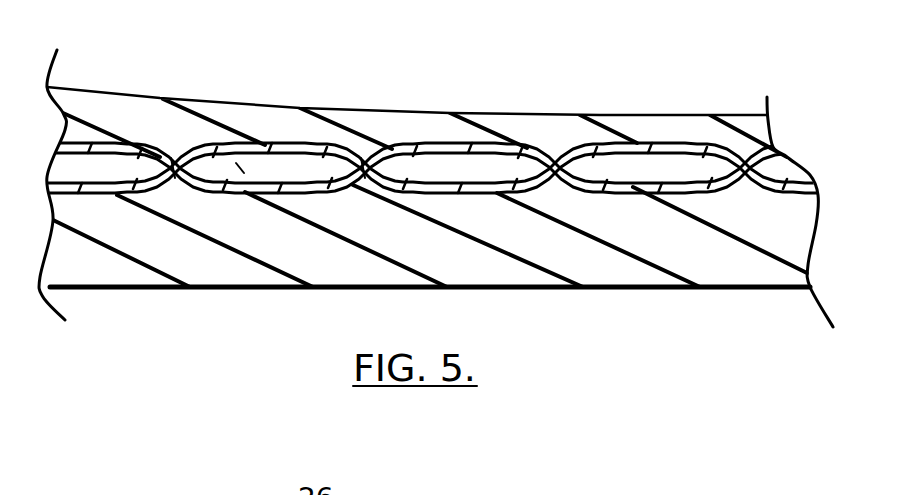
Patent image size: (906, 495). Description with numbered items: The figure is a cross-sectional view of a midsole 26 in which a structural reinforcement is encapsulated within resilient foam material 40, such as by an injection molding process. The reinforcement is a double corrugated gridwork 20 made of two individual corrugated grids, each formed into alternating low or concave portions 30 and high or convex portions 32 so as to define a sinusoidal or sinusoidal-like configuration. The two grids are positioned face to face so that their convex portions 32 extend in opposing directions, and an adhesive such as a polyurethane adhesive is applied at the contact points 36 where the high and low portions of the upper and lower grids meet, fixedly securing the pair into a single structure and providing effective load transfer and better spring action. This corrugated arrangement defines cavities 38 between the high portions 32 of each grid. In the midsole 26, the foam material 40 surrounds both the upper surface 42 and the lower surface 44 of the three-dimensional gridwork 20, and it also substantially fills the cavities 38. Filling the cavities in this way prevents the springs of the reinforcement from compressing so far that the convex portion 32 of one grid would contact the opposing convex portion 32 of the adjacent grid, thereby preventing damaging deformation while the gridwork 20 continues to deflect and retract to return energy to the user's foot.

The double corrugated gridwork 20 is at (613, 153).
The midsole 26 is at (542, 97).
The low (concave) portion 30 is at (467, 193).
The high (convex) portion 32 is at (422, 148).
The contact points 36 is at (163, 167).
The cavities 38 is at (240, 167).
The resilient foam material 40 is at (600, 268).
The upper surface 42 is at (703, 147).
The lower surface 44 is at (715, 192).